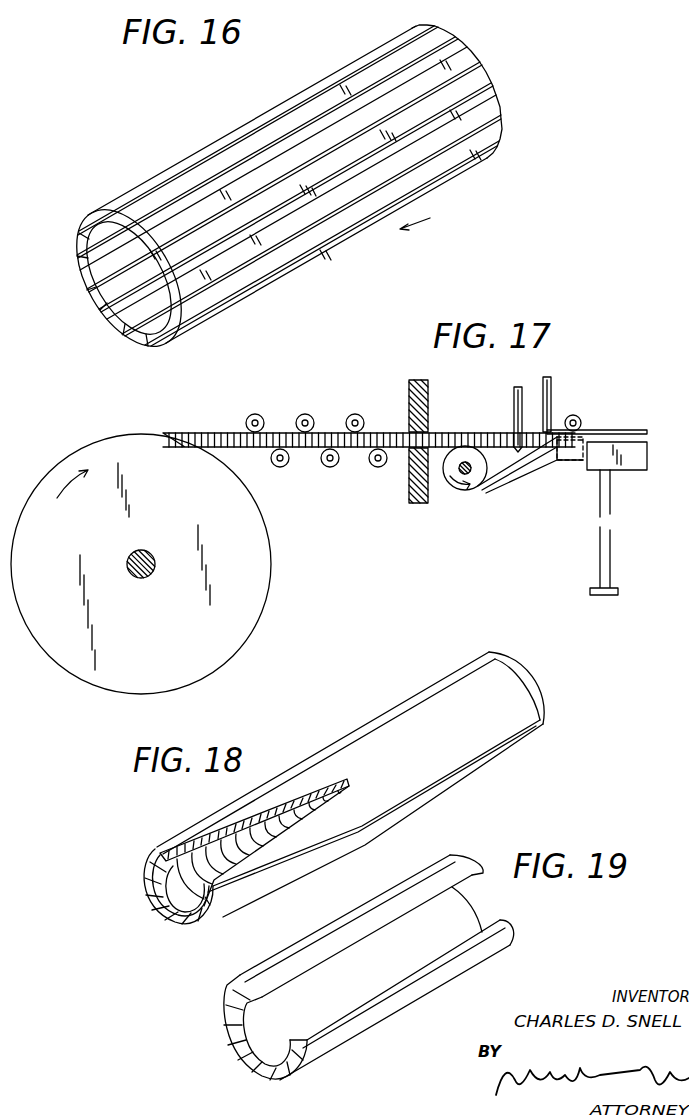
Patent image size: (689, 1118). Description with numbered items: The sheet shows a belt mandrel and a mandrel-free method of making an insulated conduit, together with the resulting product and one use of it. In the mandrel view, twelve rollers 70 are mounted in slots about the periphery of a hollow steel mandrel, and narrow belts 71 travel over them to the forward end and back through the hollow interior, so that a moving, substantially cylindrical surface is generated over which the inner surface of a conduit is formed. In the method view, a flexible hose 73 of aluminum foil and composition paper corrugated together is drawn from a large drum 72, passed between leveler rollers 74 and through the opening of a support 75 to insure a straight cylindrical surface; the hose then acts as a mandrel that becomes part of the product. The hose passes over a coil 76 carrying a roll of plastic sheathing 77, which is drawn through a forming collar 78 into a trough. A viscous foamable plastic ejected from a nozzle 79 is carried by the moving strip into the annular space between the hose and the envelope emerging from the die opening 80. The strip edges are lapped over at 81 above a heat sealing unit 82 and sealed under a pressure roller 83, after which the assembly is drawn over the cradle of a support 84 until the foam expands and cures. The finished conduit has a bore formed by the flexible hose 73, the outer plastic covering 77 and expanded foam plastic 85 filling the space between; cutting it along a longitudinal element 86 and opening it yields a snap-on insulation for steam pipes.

In FIG. 16, the rollers 70 is at (78, 316).
In FIG. 16, the belts 71 is at (185, 197).
In FIG. 17, the drum 72 is at (250, 594).
In FIG. 17, the flexible hose 73 is at (212, 410).
In FIG. 18, the flexible hose 73 is at (150, 882).
In FIG. 17, the leveler rollers 74 is at (328, 468).
In FIG. 17, the support 75 is at (428, 404).
In FIG. 17, the coil 76 is at (458, 488).
In FIG. 17, the plastic sheathing 77 is at (492, 488).
In FIG. 18, the plastic sheathing 77 is at (374, 737).
In FIG. 17, the forming collar 78 is at (528, 474).
In FIG. 17, the nozzle 79 is at (522, 390).
In FIG. 17, the die opening 80 is at (562, 456).
In FIG. 17, the lapped edges 81 is at (561, 430).
In FIG. 17, the heat sealing unit 82 is at (551, 386).
In FIG. 17, the pressure roller 83 is at (580, 417).
In FIG. 17, the support 84 is at (636, 462).
In FIG. 18, the expanded foam plastic 85 is at (165, 915).
In FIG. 19, the longitudinal element 86 is at (327, 957).